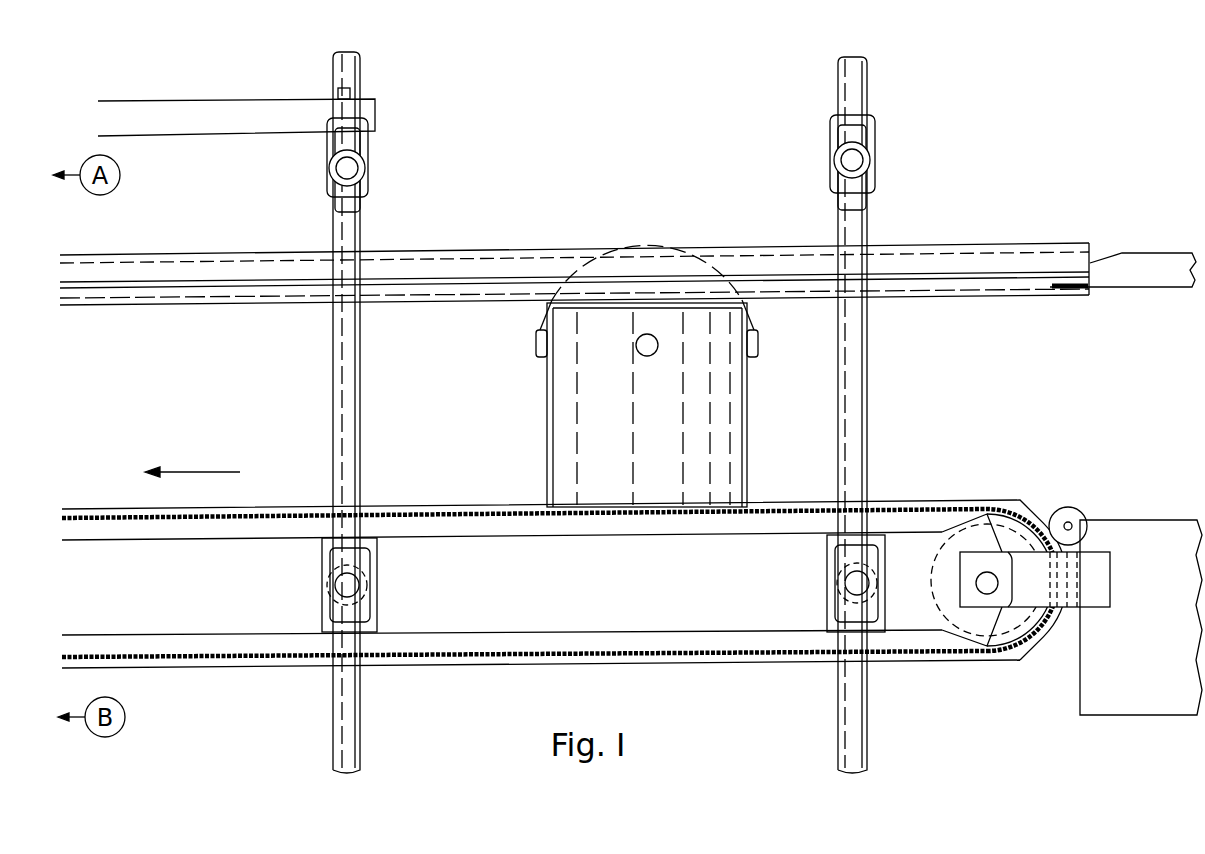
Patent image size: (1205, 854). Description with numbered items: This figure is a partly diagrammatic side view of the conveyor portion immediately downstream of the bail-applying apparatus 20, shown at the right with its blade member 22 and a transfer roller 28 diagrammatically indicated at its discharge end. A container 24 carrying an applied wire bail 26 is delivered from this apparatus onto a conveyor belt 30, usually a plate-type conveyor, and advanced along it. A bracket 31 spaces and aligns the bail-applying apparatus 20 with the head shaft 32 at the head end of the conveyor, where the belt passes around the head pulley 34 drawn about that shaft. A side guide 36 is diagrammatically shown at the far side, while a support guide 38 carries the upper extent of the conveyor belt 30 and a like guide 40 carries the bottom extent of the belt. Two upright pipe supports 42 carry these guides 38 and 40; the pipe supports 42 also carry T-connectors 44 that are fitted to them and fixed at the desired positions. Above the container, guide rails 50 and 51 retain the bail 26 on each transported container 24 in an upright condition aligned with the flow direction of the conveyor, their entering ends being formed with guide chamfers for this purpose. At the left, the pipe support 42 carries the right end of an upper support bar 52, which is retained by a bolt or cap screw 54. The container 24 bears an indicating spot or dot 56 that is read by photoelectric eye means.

The bail-applying apparatus 20 is at (1148, 533).
The blade member 22 is at (1134, 262).
The container 24 is at (677, 422).
The wire bail 26 is at (536, 321).
The transfer roller 28 is at (1073, 511).
The conveyor belt 30 is at (436, 521).
The bracket 31 is at (1103, 587).
The head shaft 32 is at (976, 582).
The pulley 34 is at (1023, 628).
The side guide 36 is at (394, 506).
The support guide 38 is at (540, 526).
The guide 40 is at (650, 636).
The upright pipe supports 42 is at (361, 378).
The T-connectors 44 is at (366, 151).
The guide rail 50 is at (909, 290).
The guide rail 51 is at (912, 256).
The upper support bar 52 is at (205, 108).
The bolt or cap screw 54 is at (350, 89).
The indicating spot or dot 56 is at (636, 345).